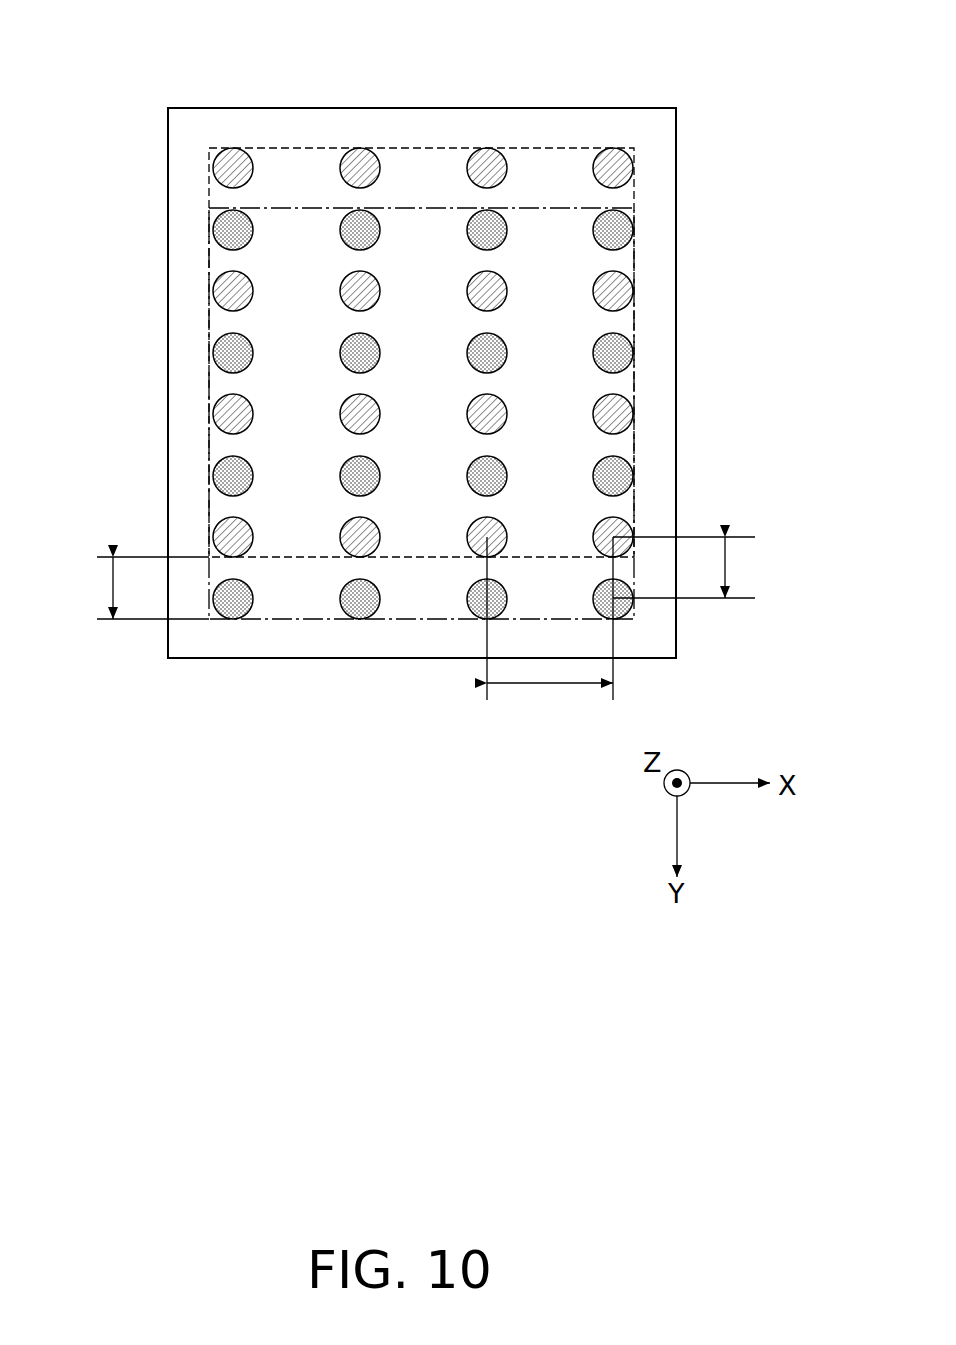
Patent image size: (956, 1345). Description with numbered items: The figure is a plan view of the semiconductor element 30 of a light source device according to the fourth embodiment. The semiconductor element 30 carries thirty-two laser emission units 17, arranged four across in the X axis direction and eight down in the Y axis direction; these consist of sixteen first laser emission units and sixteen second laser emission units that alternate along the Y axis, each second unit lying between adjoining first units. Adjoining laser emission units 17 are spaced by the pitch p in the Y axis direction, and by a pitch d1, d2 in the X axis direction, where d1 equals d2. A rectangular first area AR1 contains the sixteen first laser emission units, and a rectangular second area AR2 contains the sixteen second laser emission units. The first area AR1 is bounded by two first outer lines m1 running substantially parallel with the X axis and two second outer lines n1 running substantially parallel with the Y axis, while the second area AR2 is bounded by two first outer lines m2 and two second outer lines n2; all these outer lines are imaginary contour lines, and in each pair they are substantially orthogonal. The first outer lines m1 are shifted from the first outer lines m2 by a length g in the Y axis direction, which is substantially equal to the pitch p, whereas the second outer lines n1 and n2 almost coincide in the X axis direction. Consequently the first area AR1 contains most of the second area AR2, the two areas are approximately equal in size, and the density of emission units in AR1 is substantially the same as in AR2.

The semiconductor element 30 is at (194, 108).
The laser emission units 17 is at (433, 362).
The second area AR2 is at (421, 362).
The first area AR1 is at (421, 362).
The first outer lines m1 is at (300, 208).
The first outer lines m2 is at (407, 148).
The second outer lines n1 is at (209, 580).
The second outer lines n2 is at (209, 187).
The length g is at (147, 588).
The pitch p is at (684, 567).
The pitch d1 is at (550, 627).
The pitch d2 is at (550, 627).